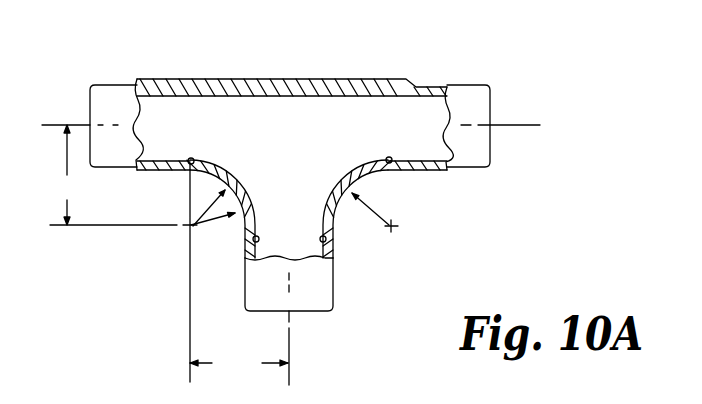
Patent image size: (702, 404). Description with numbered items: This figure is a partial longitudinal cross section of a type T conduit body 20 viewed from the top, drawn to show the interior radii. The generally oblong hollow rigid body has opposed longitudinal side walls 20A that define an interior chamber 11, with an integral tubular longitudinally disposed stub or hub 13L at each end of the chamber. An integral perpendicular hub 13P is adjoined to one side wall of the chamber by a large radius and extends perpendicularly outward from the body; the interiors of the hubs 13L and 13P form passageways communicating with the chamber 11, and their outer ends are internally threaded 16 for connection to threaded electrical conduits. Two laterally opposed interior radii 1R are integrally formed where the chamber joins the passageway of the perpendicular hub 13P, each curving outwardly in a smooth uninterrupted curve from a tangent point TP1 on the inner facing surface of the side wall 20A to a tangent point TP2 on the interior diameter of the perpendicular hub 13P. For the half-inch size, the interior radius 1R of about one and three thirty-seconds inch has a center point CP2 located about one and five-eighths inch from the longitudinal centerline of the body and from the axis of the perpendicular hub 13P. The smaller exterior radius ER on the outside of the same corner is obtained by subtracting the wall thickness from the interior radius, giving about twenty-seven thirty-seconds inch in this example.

The conduit body 20 is at (545, 65).
The interior chamber 11 is at (306, 137).
The longitudinal hub 13L is at (110, 96).
The longitudinal side wall 20A is at (210, 100).
The internal threads 16 is at (102, 107).
The tangent point TP1 is at (194, 158).
The tangent point TP2 is at (320, 239).
The interior radius 1R is at (190, 202).
The exterior radius ER is at (215, 220).
The center point CP2 is at (169, 255).
The perpendicular hub 13P is at (323, 297).